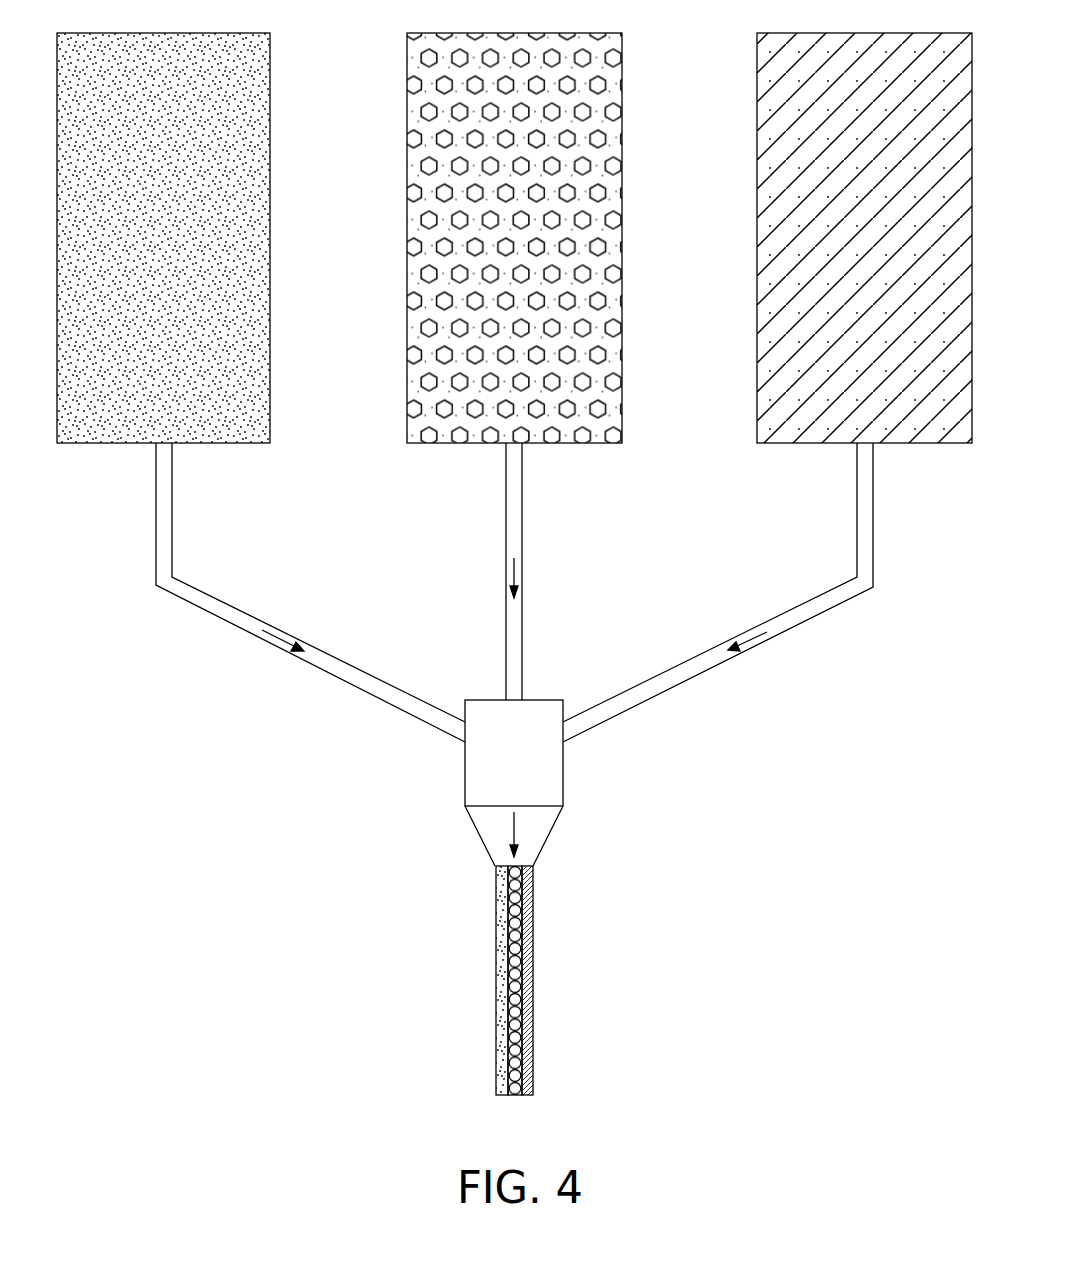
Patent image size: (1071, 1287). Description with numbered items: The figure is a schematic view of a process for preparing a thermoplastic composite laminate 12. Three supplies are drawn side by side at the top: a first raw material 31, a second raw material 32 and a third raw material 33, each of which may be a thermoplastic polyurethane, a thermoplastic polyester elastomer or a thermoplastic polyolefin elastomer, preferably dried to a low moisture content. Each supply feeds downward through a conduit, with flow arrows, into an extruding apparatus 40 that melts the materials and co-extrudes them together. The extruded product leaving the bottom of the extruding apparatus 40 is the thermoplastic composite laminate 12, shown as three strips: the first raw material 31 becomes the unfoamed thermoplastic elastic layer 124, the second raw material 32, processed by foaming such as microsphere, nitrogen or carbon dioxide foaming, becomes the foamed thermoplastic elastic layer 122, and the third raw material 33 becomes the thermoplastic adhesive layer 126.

The first raw material 31 is at (227, 420).
The second raw material 32 is at (570, 421).
The third raw material 33 is at (815, 423).
The extruding apparatus 40 is at (257, 663).
The thermoplastic composite laminate 12 is at (586, 980).
The unfoamed thermoplastic elastic layer 124 is at (505, 955).
The foamed thermoplastic elastic layer 122 is at (518, 990).
The thermoplastic adhesive layer 126 is at (530, 1027).